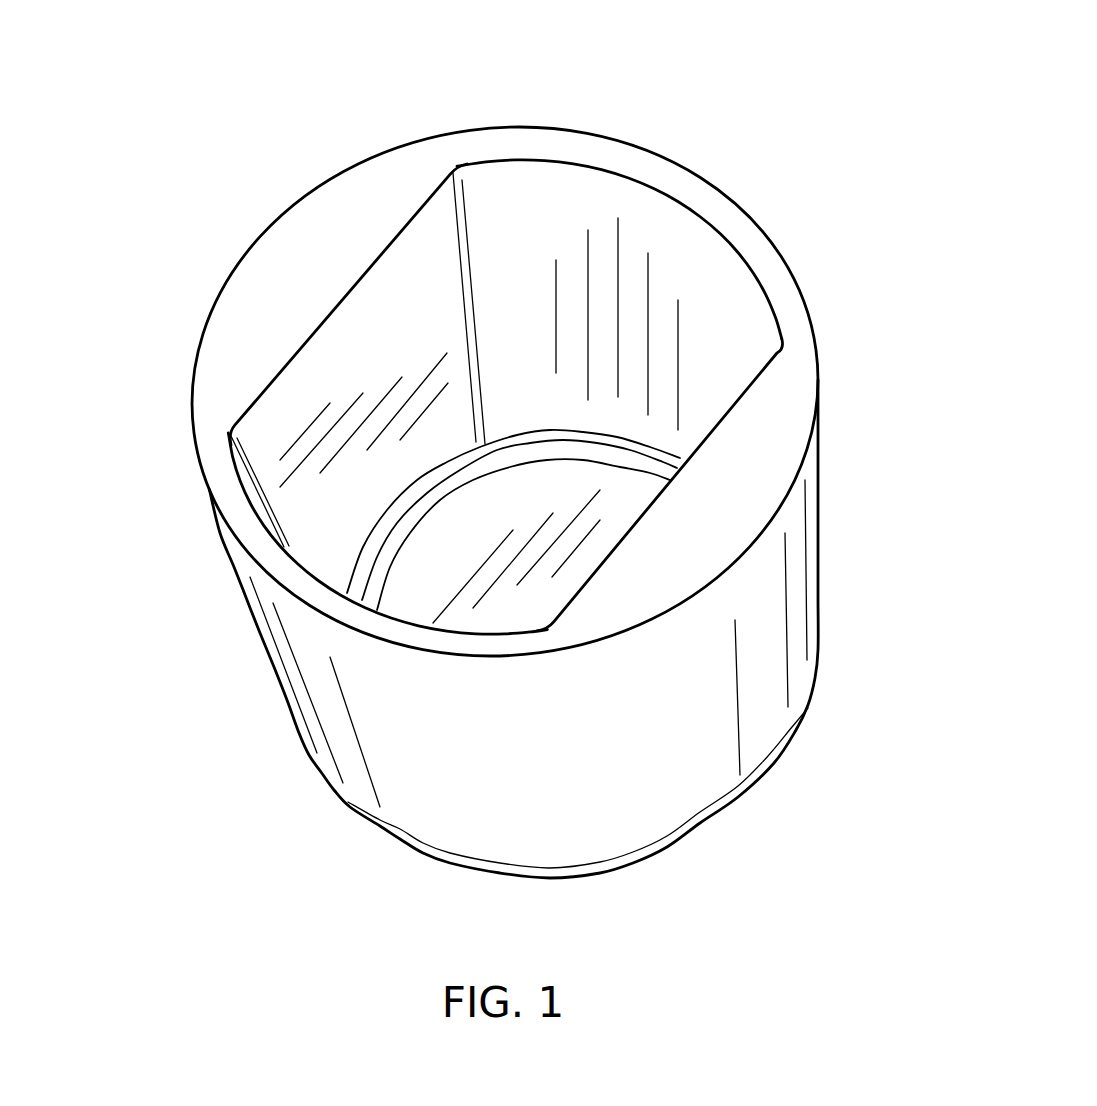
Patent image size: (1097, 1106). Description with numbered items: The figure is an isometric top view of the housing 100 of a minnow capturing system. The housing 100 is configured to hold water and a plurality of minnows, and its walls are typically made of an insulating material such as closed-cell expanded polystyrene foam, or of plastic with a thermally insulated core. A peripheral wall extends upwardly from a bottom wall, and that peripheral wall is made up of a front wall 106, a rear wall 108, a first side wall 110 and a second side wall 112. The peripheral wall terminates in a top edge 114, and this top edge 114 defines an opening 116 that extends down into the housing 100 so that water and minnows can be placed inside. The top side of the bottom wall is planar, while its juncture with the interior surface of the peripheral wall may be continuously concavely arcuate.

The housing 100 is at (170, 605).
The front wall 106 is at (777, 590).
The rear wall 108 is at (277, 220).
The first side wall 110 is at (673, 162).
The second side wall 112 is at (352, 628).
The top edge 114 is at (777, 418).
The opening 116 is at (730, 295).